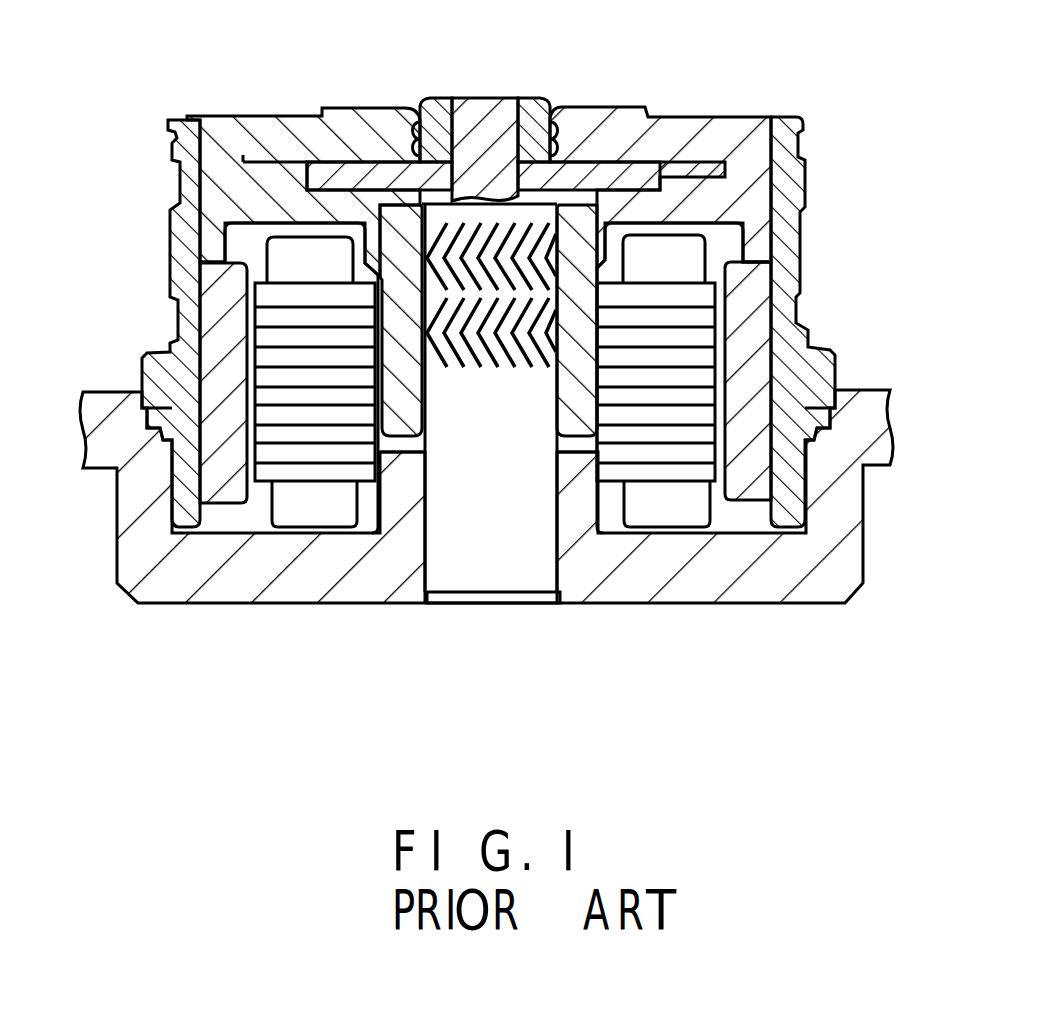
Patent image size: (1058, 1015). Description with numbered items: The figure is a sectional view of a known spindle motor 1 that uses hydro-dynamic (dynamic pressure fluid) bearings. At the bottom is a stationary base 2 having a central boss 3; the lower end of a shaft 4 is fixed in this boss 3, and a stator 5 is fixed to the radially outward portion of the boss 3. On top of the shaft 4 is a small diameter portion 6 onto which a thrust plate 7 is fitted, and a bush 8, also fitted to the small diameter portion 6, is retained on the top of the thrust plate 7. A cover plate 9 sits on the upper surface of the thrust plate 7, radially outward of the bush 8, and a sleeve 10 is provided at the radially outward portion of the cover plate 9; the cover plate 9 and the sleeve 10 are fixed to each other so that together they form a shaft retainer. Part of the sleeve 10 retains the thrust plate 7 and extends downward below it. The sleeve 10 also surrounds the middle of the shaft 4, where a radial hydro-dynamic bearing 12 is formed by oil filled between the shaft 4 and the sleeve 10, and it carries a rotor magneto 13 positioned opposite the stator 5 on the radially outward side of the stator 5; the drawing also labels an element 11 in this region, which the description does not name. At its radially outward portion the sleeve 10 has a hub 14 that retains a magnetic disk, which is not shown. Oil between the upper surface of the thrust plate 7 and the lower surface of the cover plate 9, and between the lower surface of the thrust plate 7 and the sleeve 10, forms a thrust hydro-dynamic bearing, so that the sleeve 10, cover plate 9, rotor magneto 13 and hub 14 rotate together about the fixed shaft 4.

The spindle motor 1 is at (509, 350).
The stationary base 2 is at (760, 550).
The boss 3 is at (587, 513).
The shaft 4 is at (463, 590).
The stator 5 is at (302, 520).
The small diameter portion 6 is at (492, 112).
The thrust plate 7 is at (393, 150).
The bush 8 is at (441, 112).
The cover plate 9 is at (592, 130).
The sleeve 10 is at (280, 177).
The stator core 11 is at (698, 336).
The radial hydro-dynamic bearing 12 is at (540, 372).
The rotor magneto 13 is at (753, 467).
The hub 14 is at (180, 263).